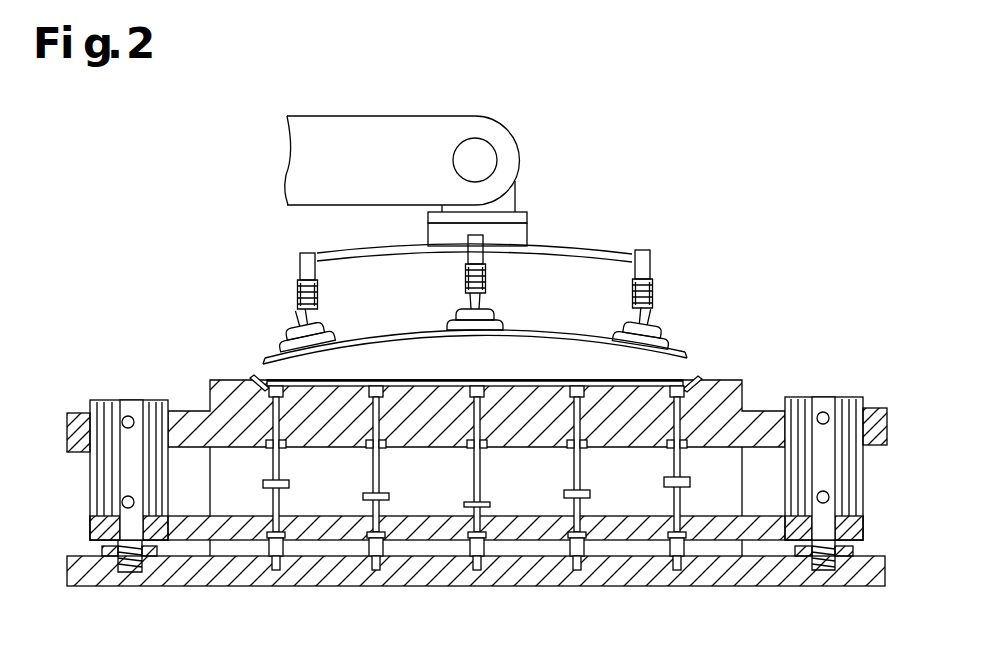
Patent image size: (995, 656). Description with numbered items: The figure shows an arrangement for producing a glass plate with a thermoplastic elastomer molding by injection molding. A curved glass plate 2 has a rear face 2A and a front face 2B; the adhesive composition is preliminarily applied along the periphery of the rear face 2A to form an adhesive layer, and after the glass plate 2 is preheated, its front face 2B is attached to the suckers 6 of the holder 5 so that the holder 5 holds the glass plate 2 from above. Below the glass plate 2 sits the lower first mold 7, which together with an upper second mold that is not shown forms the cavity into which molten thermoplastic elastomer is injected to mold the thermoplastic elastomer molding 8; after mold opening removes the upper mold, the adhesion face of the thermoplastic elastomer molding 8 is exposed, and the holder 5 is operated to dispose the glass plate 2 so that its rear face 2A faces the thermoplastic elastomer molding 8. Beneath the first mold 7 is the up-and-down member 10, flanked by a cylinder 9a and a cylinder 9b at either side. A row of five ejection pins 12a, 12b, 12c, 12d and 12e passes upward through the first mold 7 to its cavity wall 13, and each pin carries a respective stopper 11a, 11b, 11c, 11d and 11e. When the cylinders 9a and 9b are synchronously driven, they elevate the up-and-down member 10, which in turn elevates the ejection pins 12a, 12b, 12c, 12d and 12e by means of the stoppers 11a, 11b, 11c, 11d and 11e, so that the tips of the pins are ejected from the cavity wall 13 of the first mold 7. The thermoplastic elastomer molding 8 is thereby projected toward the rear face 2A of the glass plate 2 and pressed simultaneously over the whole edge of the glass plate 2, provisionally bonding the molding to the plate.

The glass plate 2 is at (475, 332).
The rear face 2A is at (525, 339).
The front face 2B is at (545, 326).
The holder 5 is at (423, 124).
The sucker 6 is at (340, 337).
The first mold 7 is at (727, 379).
The thermoplastic elastomer molding 8 is at (692, 377).
The cylinder 9a is at (828, 470).
The cylinder 9b is at (125, 475).
The up-and-down member 10 is at (207, 590).
The stopper 11a is at (271, 547).
The stopper 11b is at (371, 547).
The stopper 11c is at (472, 547).
The stopper 11d is at (572, 547).
The stopper 11e is at (672, 547).
The ejection pin 12a is at (279, 466).
The ejection pin 12b is at (379, 466).
The ejection pin 12c is at (480, 466).
The ejection pin 12d is at (580, 466).
The ejection pin 12e is at (680, 466).
The cavity wall 13 is at (347, 385).